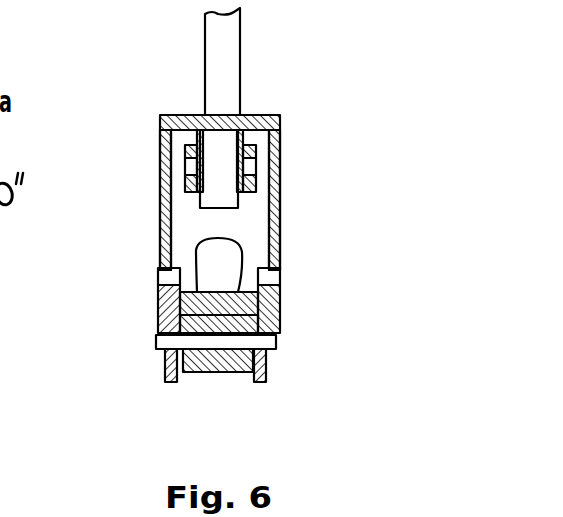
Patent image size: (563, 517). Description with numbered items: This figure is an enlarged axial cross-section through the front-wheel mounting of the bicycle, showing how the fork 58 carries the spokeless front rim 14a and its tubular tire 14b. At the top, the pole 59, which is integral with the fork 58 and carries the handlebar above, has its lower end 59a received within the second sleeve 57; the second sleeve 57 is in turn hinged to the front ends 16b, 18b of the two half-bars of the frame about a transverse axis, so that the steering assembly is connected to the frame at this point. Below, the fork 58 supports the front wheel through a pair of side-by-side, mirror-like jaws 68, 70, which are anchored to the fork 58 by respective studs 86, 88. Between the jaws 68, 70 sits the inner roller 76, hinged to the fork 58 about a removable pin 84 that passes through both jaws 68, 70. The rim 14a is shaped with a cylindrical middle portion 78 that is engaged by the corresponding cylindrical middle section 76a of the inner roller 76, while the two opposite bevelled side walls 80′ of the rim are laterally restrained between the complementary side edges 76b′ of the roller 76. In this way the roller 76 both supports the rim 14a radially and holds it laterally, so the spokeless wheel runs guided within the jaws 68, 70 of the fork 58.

The pole 59 is at (210, 58).
The second sleeve 57 is at (262, 120).
The fork 58 is at (283, 118).
The front end of half-bar 18b is at (283, 180).
The lower end of pole 59a is at (217, 190).
The front end of half-bar 16b is at (192, 185).
The tubular tire 14b is at (234, 256).
The spokeless rim 14a is at (244, 288).
The cylindrical middle portion 78 is at (278, 318).
The stud 86 is at (160, 276).
The stud 88 is at (280, 268).
The bevelled side wall 80′ is at (160, 322).
The removable pin 84 is at (158, 342).
The inner roller 76 is at (165, 358).
The jaw 68 is at (168, 375).
The jaw 70 is at (268, 370).
The side edge of inner roller 76b′ is at (193, 371).
The cylindrical middle section 76a is at (218, 371).